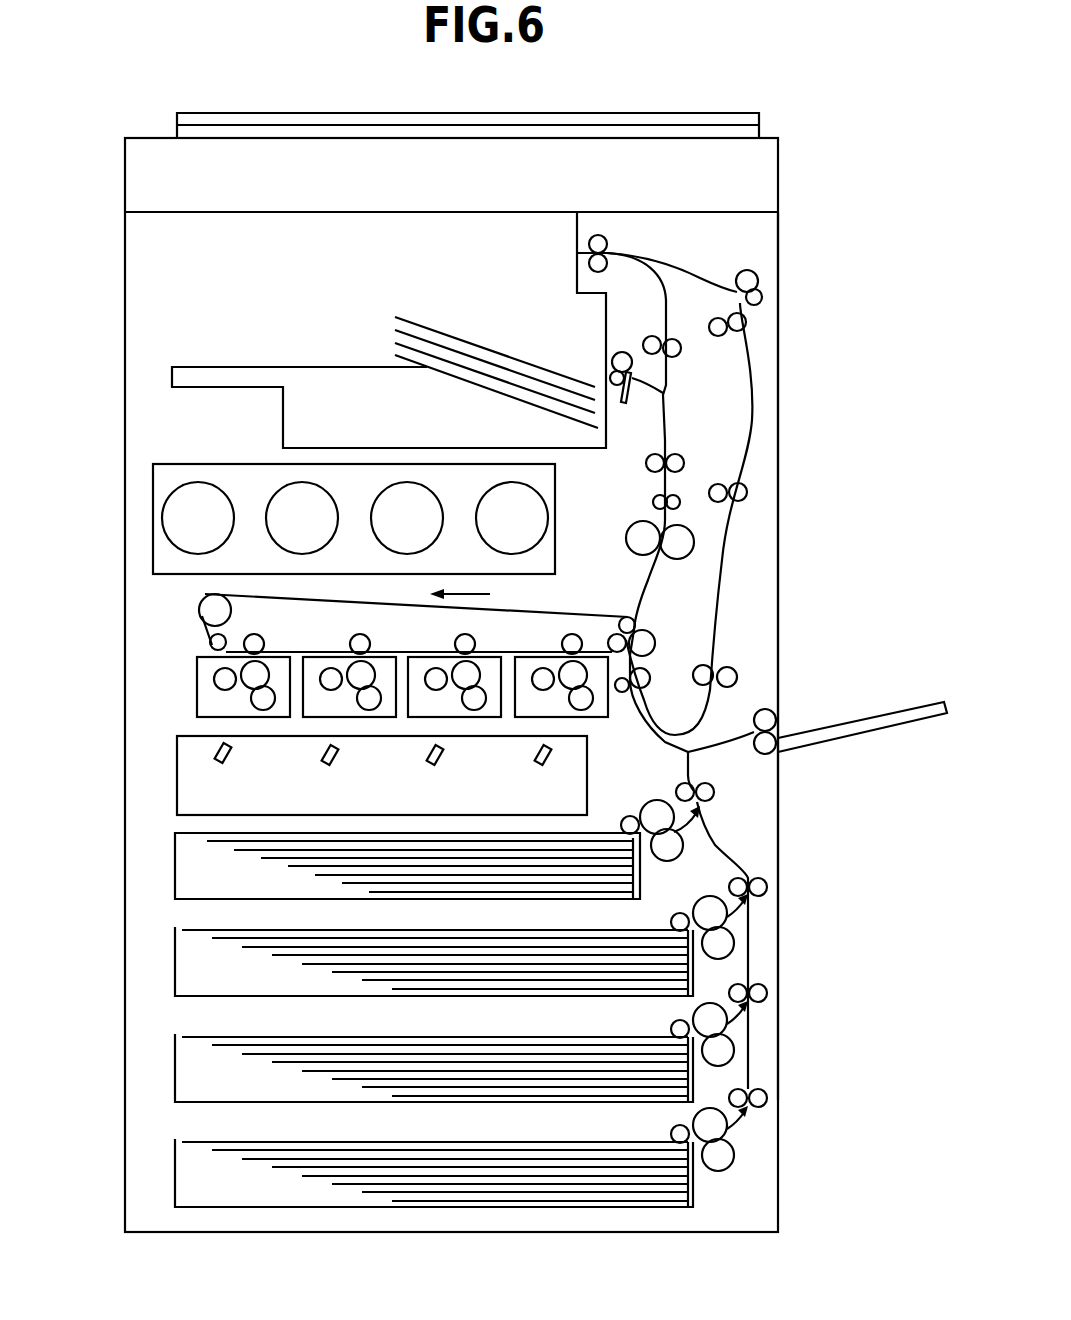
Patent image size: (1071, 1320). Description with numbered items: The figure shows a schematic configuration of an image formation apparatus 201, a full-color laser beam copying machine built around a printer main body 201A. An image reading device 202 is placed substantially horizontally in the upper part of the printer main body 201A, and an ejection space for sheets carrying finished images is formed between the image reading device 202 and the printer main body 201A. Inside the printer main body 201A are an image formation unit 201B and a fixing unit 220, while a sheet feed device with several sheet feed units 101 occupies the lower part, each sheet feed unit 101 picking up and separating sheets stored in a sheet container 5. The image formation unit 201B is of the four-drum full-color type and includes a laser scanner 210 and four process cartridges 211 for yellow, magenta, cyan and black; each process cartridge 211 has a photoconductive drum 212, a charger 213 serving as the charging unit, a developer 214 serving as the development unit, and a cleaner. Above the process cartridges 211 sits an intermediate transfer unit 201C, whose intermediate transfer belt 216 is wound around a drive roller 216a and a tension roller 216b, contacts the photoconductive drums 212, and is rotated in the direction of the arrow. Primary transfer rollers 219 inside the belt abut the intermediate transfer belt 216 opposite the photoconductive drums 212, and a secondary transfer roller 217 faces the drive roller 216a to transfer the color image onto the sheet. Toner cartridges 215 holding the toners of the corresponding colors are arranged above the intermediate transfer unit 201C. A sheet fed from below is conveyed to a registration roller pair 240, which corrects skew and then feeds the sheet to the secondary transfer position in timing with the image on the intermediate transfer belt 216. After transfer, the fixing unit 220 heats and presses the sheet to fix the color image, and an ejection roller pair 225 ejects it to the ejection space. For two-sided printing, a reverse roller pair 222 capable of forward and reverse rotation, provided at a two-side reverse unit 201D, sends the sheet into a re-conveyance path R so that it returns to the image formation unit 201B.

The image formation apparatus 201 is at (803, 94).
The image reading device 202 is at (125, 176).
The printer main body 201A is at (780, 357).
The image formation unit 201B is at (178, 639).
The intermediate transfer unit 201C is at (568, 585).
The two-side reverse unit 201D is at (730, 260).
The reverse roller pair 222 is at (598, 230).
The ejection roller pair 225 is at (610, 357).
The re-conveyance path R is at (760, 440).
The toner cartridges 215 is at (170, 520).
The intermediate transfer belt 216 is at (594, 612).
The drive roller 216a is at (630, 626).
The tension roller 216b is at (210, 610).
The fixing unit 220 is at (680, 540).
The secondary transfer roller 217 is at (645, 643).
The registration roller pair 240 is at (645, 678).
The process cartridges 211 is at (197, 700).
The photoconductive drum 212 is at (260, 668).
The primary transfer rollers 219 is at (460, 647).
The developer 214 is at (223, 680).
The charger 213 is at (263, 700).
The laser scanner 210 is at (177, 772).
The sheet container 5 is at (152, 874).
The sheet feed units 101 is at (705, 822).